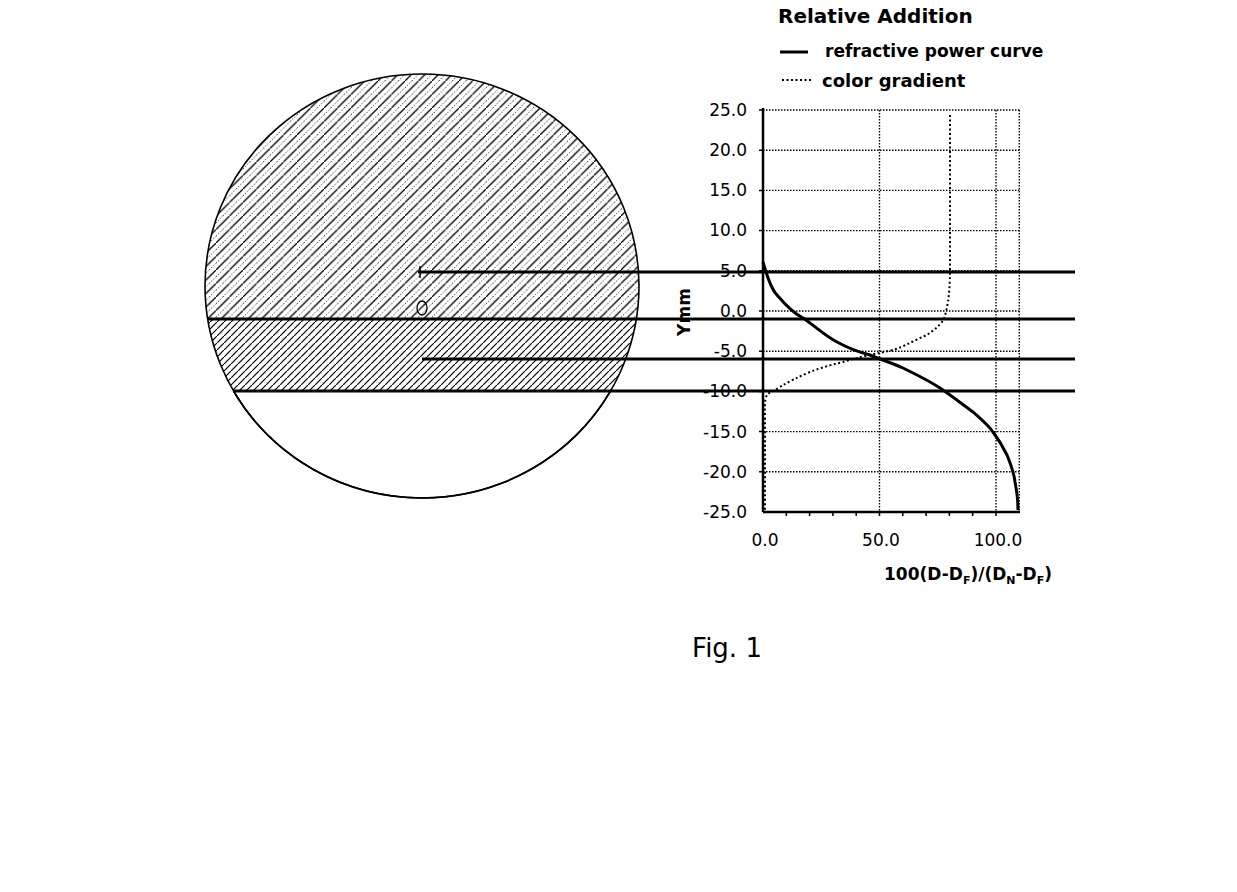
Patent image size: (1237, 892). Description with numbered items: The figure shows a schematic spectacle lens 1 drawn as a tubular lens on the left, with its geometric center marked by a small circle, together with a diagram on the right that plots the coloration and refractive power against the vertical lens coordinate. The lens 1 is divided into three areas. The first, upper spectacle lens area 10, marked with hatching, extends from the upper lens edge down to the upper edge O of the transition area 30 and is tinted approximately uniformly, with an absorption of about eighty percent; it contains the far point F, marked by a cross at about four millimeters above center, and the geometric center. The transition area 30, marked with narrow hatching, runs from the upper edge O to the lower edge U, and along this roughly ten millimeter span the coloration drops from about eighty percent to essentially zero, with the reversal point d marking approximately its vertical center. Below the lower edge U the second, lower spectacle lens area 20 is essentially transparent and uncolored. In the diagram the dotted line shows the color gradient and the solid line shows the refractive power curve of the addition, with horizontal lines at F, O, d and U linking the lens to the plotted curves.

The spectacle lens 1 is at (294, 45).
The first, upper spectacle lens area 10 is at (527, 138).
The second, lower spectacle lens area 20 is at (508, 460).
The transition area 30 is at (205, 319).
The far point F is at (1048, 270).
The upper edge of the transition area O is at (1063, 317).
The reversal point d is at (1068, 359).
The lower edge of the transition area U is at (1060, 400).